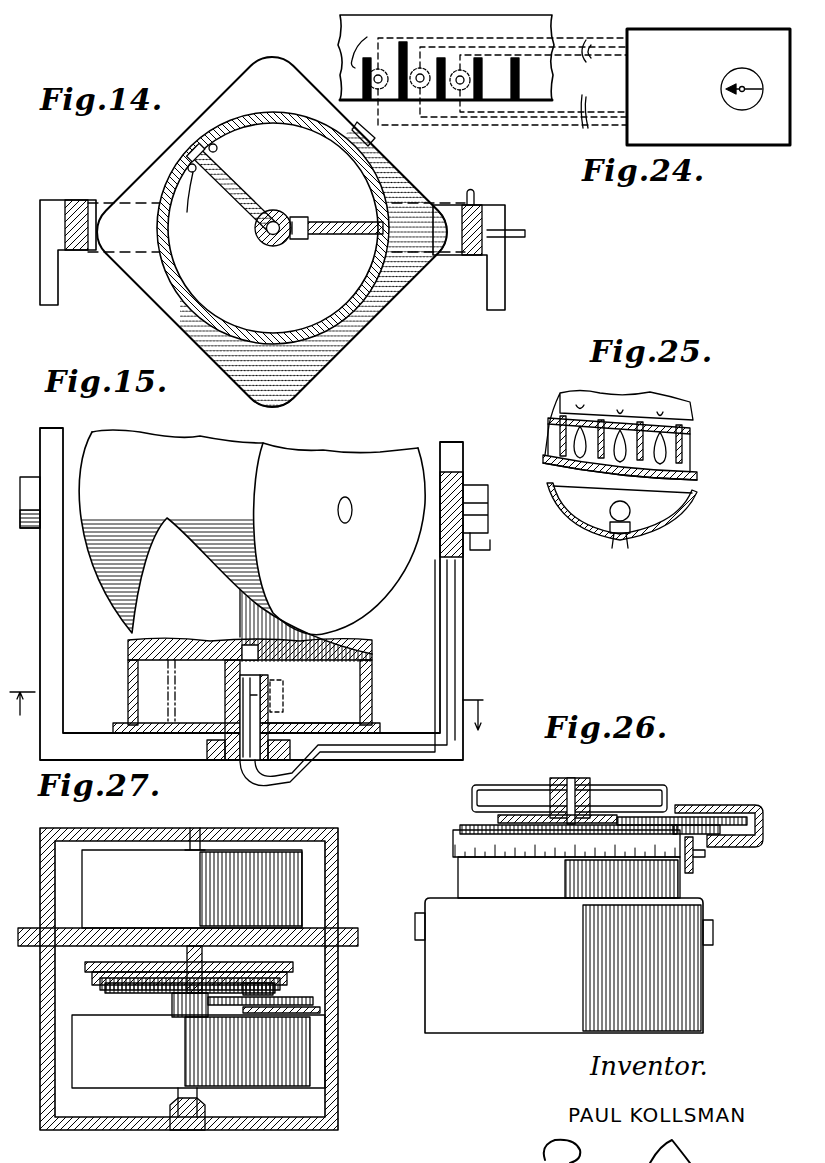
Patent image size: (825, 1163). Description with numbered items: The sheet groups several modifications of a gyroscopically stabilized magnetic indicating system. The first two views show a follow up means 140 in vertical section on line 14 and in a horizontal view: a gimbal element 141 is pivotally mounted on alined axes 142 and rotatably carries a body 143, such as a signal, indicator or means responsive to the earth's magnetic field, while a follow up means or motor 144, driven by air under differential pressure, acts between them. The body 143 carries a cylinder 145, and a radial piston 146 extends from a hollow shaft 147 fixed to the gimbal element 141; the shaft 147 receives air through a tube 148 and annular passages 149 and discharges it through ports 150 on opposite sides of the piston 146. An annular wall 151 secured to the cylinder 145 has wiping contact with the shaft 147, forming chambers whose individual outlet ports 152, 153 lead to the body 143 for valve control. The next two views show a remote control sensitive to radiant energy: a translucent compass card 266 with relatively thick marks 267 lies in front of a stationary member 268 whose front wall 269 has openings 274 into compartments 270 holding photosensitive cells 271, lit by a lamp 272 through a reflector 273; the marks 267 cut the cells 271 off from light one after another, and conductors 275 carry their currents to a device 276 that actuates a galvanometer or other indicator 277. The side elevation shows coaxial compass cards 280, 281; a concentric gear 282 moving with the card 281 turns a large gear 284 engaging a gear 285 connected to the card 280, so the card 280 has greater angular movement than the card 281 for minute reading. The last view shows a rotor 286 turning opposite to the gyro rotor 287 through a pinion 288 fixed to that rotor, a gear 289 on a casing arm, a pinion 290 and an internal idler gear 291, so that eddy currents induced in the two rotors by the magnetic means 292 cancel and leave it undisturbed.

In FIG. 15, the section line 14 is at (251, 719).
In FIG. 14, the follow up means 140 is at (126, 161).
In FIG. 14, the gimbal element 141 is at (472, 255).
In FIG. 15, the gimbal element 141 is at (80, 748).
In FIG. 14, the alined axes 142 is at (50, 200).
In FIG. 15, the alined axes 142 is at (30, 530).
In FIG. 14, the body 143 is at (290, 72).
In FIG. 15, the body 143 is at (181, 450).
In FIG. 15, the follow up means or motor 144 is at (117, 687).
In FIG. 15, the cylinder 145 is at (372, 692).
In FIG. 14, the radial piston 146 is at (325, 235).
In FIG. 15, the radial piston 146 is at (320, 718).
In FIG. 14, the hollow shaft 147 is at (262, 248).
In FIG. 15, the hollow shaft 147 is at (230, 760).
In FIG. 15, the tube 148 is at (390, 752).
In FIG. 15, the annular passages 149 is at (440, 472).
In FIG. 14, the ports 150 is at (290, 218).
In FIG. 15, the ports 150 is at (250, 692).
In FIG. 14, the annular wall 151 is at (243, 190).
In FIG. 15, the annular wall 151 is at (180, 722).
In FIG. 14, the outlet port 152 is at (195, 195).
In FIG. 14, the outlet port 153 is at (218, 148).
In FIG. 24, the compass card 266 is at (446, 57).
In FIG. 25, the compass card 266 is at (560, 466).
In FIG. 24, the marks 267 is at (360, 41).
In FIG. 25, the stationary member 268 is at (700, 414).
In FIG. 25, the front wall 269 is at (700, 465).
In FIG. 25, the compartments 270 is at (620, 428).
In FIG. 25, the photosensitive cells 271 is at (575, 432).
In FIG. 25, the lamp 272 is at (612, 515).
In FIG. 25, the reflector 273 is at (680, 502).
In FIG. 25, the openings 274 is at (548, 445).
In FIG. 24, the conductors 275 is at (502, 83).
In FIG. 24, the device 276 is at (676, 38).
In FIG. 24, the galvanometer or indicator 277 is at (722, 82).
In FIG. 26, the compass card 280 is at (512, 773).
In FIG. 26, the compass card 281 is at (450, 843).
In FIG. 26, the concentric gear 282 is at (462, 825).
In FIG. 26, the large gear 284 is at (725, 815).
In FIG. 26, the gear 285 is at (528, 813).
In FIG. 27, the rotor 286 is at (85, 967).
In FIG. 27, the gyro rotor 287 is at (80, 1020).
In FIG. 27, the pinion 288 is at (183, 1010).
In FIG. 27, the gear 289 is at (315, 1005).
In FIG. 27, the pinion 290 is at (285, 985).
In FIG. 27, the internal idler gear 291 is at (190, 997).
In FIG. 27, the magnetic means 292 is at (192, 878).